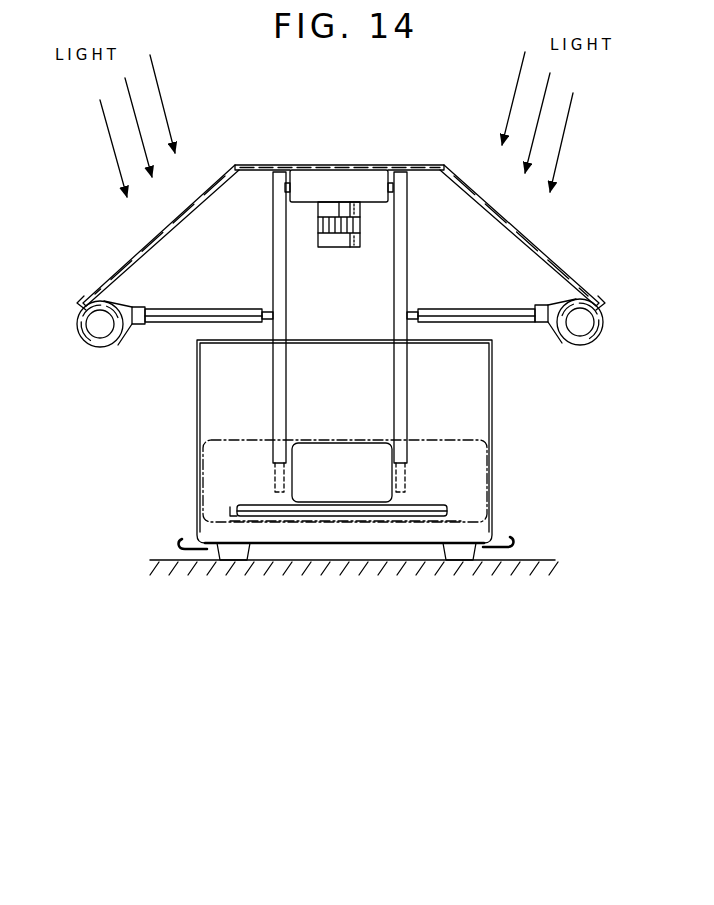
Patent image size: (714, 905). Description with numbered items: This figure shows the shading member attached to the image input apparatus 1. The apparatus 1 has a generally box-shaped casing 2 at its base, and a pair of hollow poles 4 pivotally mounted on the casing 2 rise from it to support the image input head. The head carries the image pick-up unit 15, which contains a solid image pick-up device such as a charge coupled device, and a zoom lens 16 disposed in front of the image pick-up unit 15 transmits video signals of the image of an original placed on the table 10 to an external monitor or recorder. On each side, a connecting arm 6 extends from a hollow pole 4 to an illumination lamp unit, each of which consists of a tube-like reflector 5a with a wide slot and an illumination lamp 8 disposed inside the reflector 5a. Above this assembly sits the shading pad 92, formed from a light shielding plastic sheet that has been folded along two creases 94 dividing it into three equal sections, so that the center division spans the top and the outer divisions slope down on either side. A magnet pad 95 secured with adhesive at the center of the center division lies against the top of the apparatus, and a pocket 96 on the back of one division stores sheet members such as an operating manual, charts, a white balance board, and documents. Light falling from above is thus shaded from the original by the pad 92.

The image input apparatus 1 is at (332, 561).
The casing 2 is at (238, 536).
The hollow poles 4 is at (274, 249).
The tube-like reflector 5a is at (78, 322).
The connecting arms 6 is at (197, 308).
The illumination lamp 8 is at (105, 332).
The table 10 is at (477, 503).
The image pick-up unit 15 is at (367, 178).
The zoom lens 16 is at (333, 248).
The shading pad 92 is at (103, 282).
The creases 94 is at (233, 165).
The magnet pad 95 is at (336, 165).
The pocket 96 is at (148, 232).